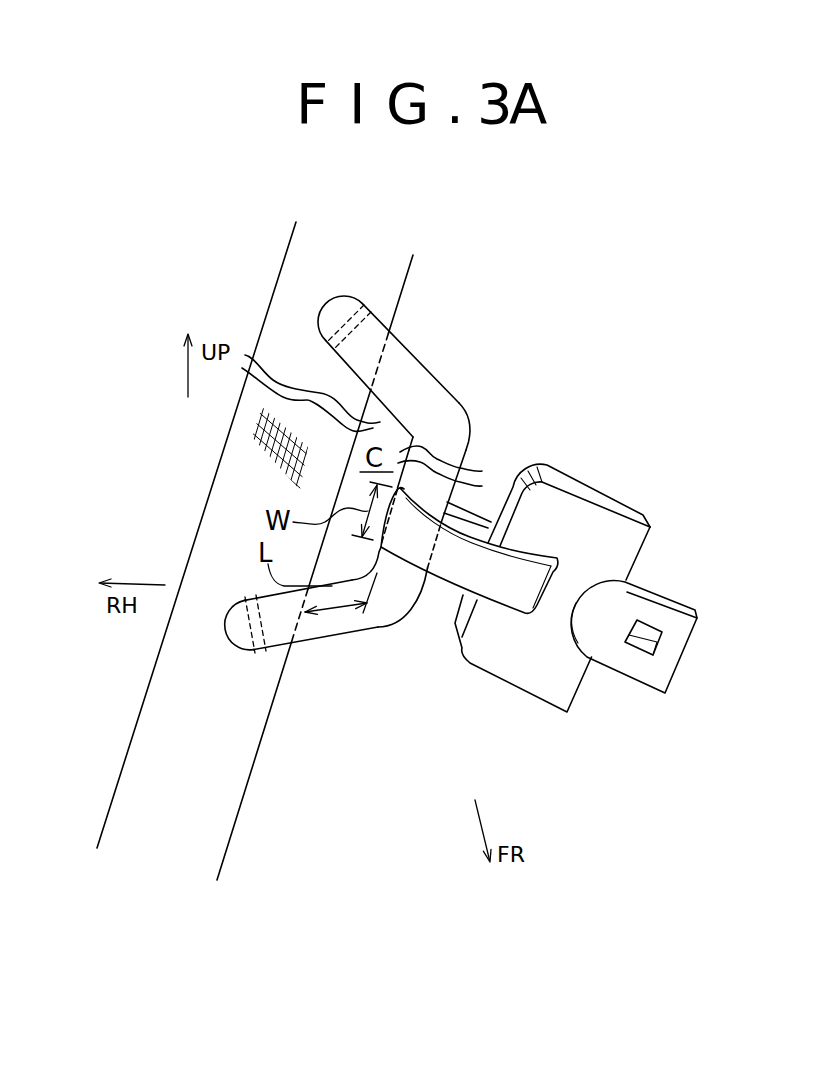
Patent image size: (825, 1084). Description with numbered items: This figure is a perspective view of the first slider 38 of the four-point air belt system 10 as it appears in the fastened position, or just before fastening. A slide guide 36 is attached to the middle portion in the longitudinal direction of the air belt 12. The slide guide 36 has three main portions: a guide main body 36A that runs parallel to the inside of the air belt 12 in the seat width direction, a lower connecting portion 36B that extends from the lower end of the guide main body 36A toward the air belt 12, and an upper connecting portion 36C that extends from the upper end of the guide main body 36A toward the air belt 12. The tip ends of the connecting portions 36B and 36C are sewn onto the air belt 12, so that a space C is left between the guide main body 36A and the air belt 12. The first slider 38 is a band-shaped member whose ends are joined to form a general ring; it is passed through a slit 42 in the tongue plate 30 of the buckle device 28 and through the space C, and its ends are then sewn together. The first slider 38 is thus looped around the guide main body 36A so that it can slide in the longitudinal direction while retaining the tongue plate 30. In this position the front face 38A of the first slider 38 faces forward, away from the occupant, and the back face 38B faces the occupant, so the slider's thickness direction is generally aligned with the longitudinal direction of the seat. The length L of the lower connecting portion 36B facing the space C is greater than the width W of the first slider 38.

The four-point air belt system 10 is at (582, 393).
The air belt 12 is at (390, 303).
The buckle device 28 is at (608, 609).
The tongue plate 30 is at (608, 609).
The slide guide 36 is at (390, 502).
The guide main body 36A is at (402, 566).
The lower connecting portion 36B is at (323, 627).
The upper connecting portion 36C is at (418, 382).
The first slider 38 is at (476, 578).
The front face 38A is at (445, 578).
The back face 38B is at (477, 503).
The slit 42 is at (541, 598).